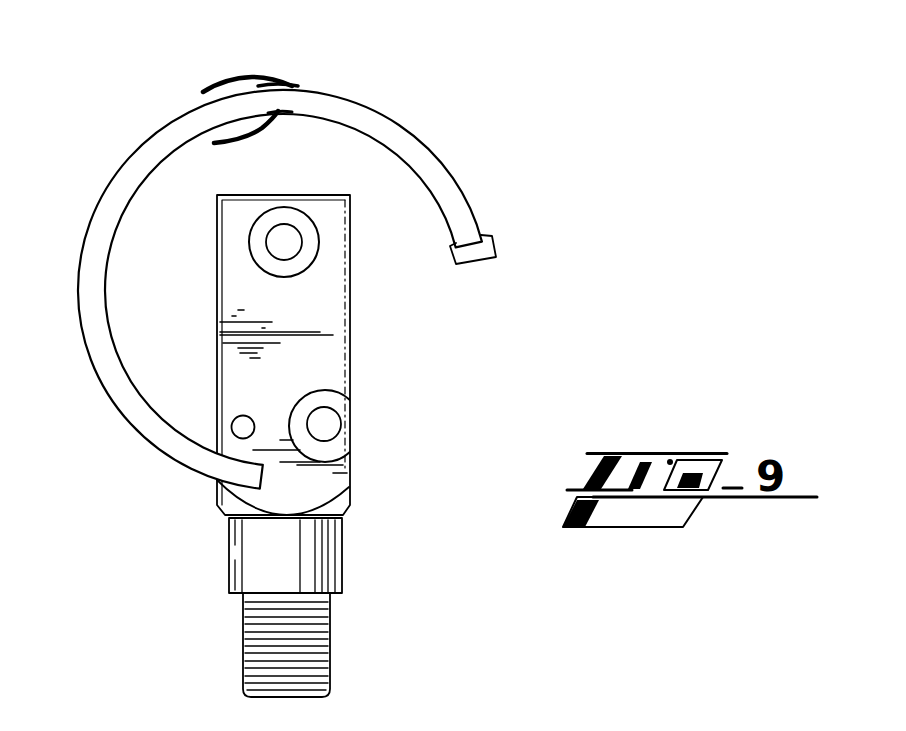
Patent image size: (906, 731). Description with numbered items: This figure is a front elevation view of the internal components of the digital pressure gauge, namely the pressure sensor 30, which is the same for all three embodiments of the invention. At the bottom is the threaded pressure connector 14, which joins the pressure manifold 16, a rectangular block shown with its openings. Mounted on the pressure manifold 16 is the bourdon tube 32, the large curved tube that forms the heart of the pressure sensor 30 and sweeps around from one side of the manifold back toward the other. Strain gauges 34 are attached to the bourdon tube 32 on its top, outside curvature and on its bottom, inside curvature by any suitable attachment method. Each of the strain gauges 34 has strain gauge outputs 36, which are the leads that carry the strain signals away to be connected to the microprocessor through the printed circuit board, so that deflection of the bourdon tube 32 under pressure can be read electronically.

The pressure connector 14 is at (337, 633).
The pressure manifold 16 is at (337, 340).
The pressure sensor 30 is at (346, 244).
The bourdon tube 32 is at (415, 130).
The strain gauges 34 is at (282, 86).
The strain gauge outputs 36 is at (207, 86).